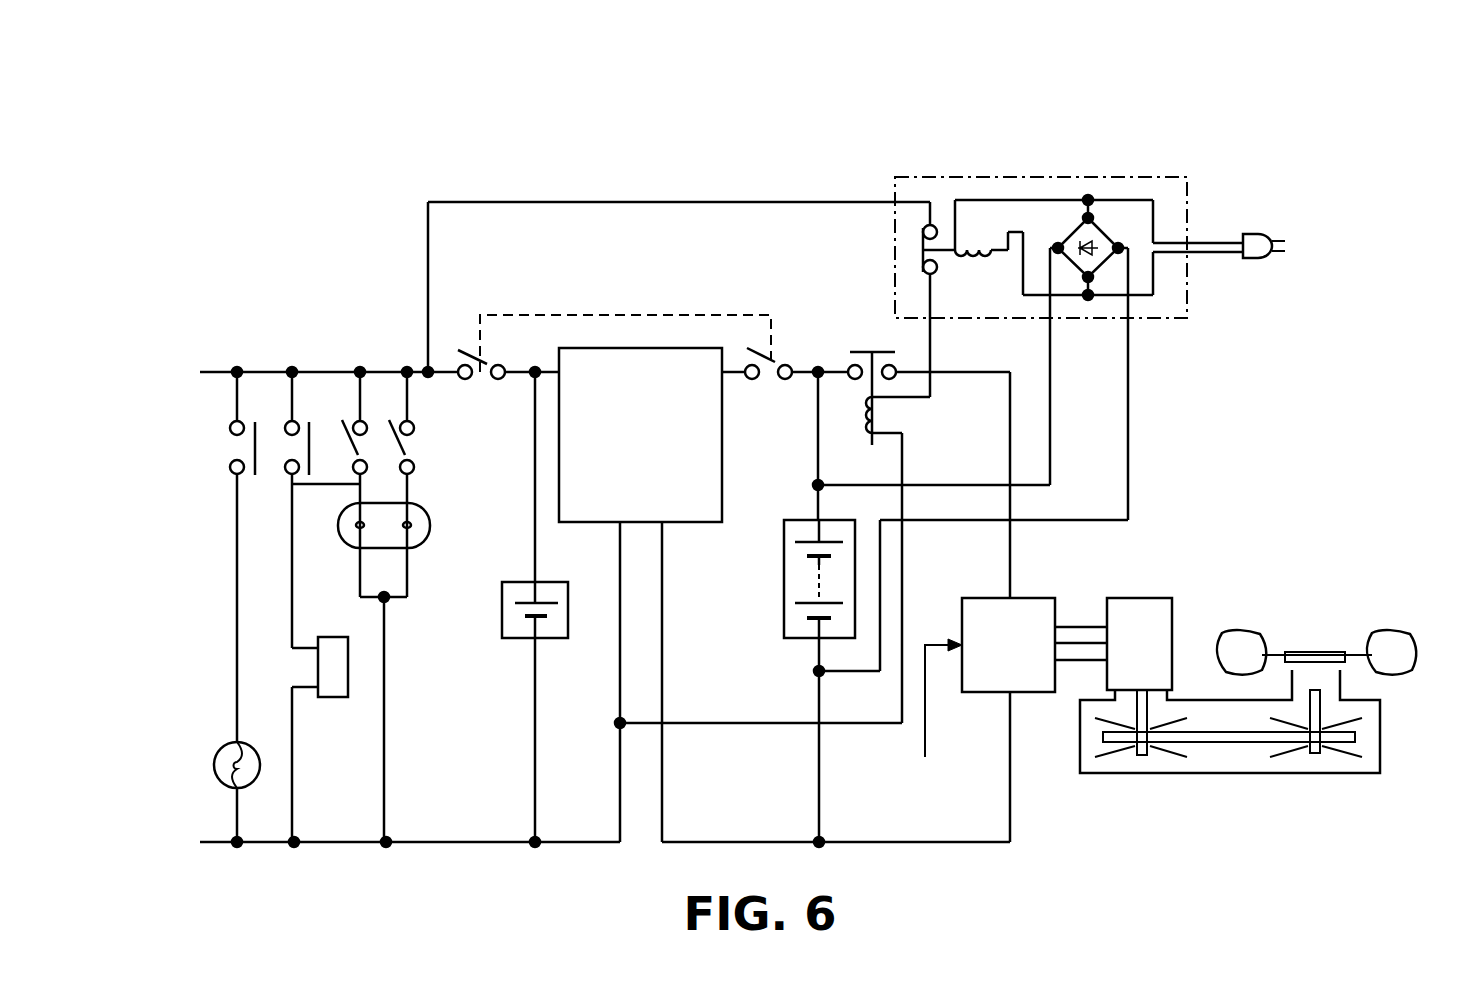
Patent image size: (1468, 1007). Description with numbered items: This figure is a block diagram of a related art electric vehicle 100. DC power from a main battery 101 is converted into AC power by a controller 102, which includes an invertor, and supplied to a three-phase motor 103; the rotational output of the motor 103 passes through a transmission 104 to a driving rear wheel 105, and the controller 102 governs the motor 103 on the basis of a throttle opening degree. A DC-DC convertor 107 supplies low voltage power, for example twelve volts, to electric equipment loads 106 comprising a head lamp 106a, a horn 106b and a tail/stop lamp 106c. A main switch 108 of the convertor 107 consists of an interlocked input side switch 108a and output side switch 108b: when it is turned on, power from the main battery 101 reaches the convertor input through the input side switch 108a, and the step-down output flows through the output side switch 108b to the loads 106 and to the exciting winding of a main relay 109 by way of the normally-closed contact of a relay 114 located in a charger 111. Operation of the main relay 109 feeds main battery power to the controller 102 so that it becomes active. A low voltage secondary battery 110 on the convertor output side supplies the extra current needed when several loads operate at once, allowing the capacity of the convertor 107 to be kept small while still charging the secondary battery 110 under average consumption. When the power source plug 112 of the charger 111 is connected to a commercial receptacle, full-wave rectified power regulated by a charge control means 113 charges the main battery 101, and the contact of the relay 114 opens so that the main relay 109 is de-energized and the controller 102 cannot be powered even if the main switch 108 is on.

The electric vehicle 100 is at (1268, 162).
The main battery 101 is at (784, 605).
The controller 102 is at (1030, 598).
The three-phase motor 103 is at (1140, 598).
The transmission 104 is at (1253, 773).
The driving rear wheel 105 is at (1240, 633).
The electric equipment loads 106 is at (295, 346).
The head lamp 106a is at (214, 766).
The horn 106b is at (318, 658).
The tail/stop lamp 106c is at (430, 530).
The DC-DC convertor 107 is at (627, 348).
The main switch 108 is at (665, 313).
The input side switch 108a is at (785, 384).
The output side switch 108b is at (493, 387).
The main relay 109 is at (850, 352).
The secondary battery 110 is at (502, 625).
The charger 111 is at (1176, 320).
The power source plug 112 is at (1262, 258).
The charge control means 113 is at (1068, 265).
The relay 114 is at (973, 252).